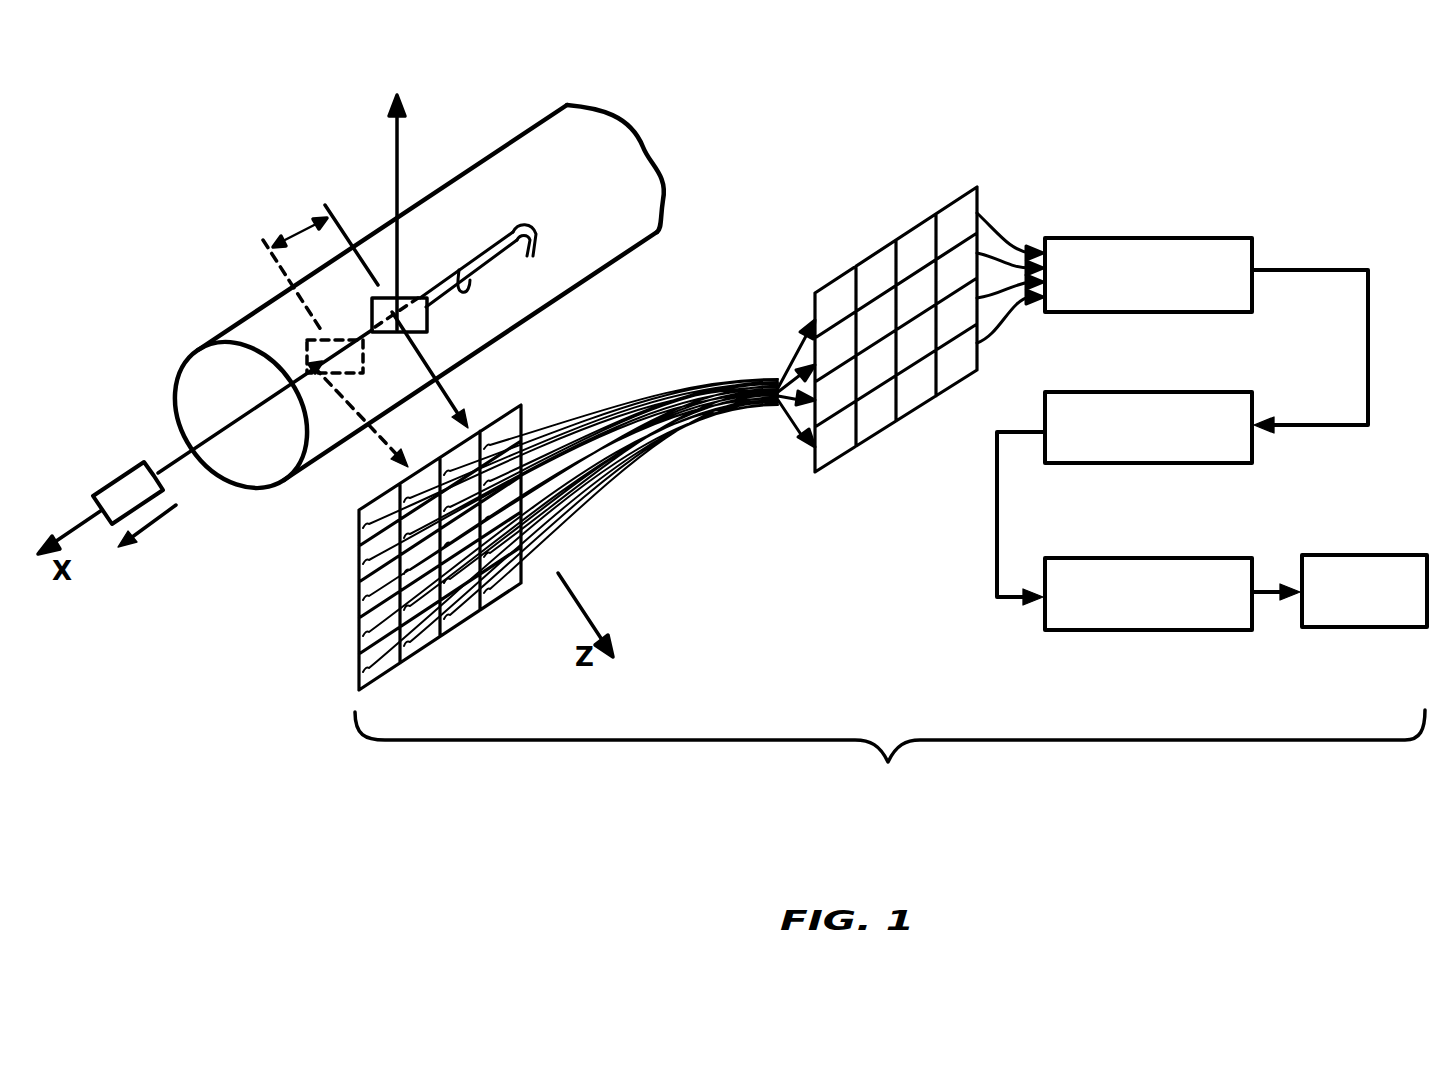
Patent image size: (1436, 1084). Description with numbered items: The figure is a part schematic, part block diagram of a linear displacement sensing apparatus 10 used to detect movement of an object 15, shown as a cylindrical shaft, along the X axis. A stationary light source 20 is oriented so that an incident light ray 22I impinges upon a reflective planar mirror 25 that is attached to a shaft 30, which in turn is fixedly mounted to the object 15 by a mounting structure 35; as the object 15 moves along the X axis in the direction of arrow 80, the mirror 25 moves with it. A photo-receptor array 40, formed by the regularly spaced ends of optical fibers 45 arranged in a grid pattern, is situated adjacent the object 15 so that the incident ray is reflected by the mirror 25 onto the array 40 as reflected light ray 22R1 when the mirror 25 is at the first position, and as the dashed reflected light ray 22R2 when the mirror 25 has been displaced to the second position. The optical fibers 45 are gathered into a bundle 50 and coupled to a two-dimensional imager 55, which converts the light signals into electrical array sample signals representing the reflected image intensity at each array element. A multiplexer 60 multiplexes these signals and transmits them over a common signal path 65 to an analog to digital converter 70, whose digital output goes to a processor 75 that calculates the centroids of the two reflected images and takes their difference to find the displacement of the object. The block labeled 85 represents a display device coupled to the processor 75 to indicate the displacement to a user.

The linear displacement sensing apparatus 10 is at (906, 803).
The object 15 is at (247, 335).
The stationary light source 20 is at (121, 475).
The incident light ray 22I is at (240, 423).
The reflected light ray at first position 22R1 is at (478, 397).
The reflected light ray at second position 22R2 is at (361, 427).
The reflective planar mirror 25 is at (385, 297).
The shaft 30 is at (490, 243).
The mounting structure 35 is at (533, 240).
The photo-receptor array 40 is at (358, 583).
The optical fibers 45 is at (543, 425).
The bundle 50 is at (700, 372).
The two-dimensional imager 55 is at (880, 250).
The multiplexer 60 is at (1170, 237).
The common signal path 65 is at (1368, 362).
The analog to digital converter 70 is at (1210, 392).
The processor 75 is at (1122, 557).
The arrow 80 is at (158, 520).
The display 85 is at (1348, 555).